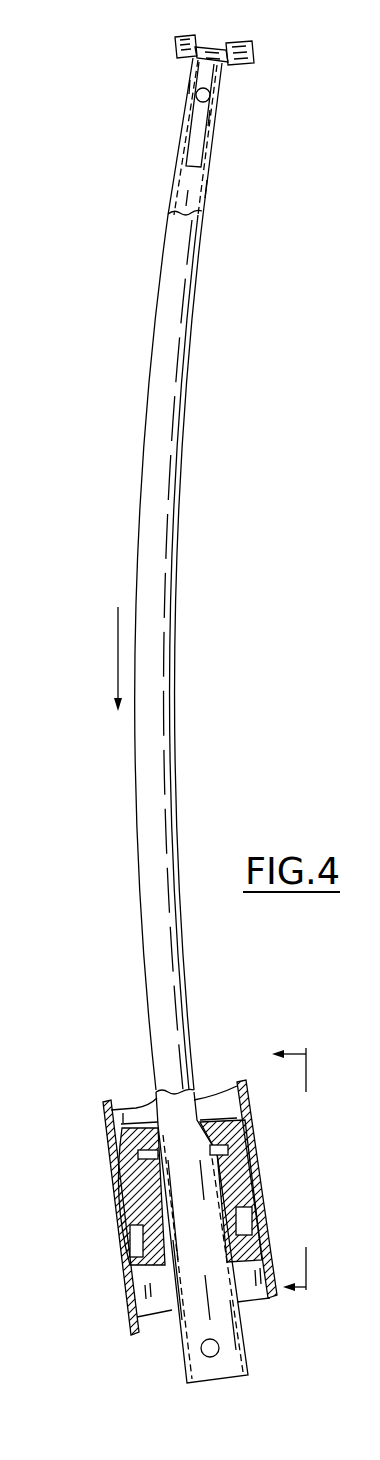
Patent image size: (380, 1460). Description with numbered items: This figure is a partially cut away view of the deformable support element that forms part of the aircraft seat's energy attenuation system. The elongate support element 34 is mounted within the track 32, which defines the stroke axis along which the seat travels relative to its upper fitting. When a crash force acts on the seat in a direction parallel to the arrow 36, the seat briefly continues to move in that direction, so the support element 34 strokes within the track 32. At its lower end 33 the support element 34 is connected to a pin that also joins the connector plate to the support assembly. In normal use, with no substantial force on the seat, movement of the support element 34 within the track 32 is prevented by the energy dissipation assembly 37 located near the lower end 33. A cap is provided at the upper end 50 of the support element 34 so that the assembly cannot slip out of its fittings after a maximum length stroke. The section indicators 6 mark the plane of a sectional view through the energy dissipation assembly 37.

The upper end 50 is at (143, 101).
The support element 34 is at (148, 418).
The arrow 36 is at (118, 672).
The track 32 is at (102, 1124).
The energy dissipation assembly 37 is at (270, 1174).
The lower end 33 is at (257, 1332).
The section line 6- 6 is at (303, 1172).